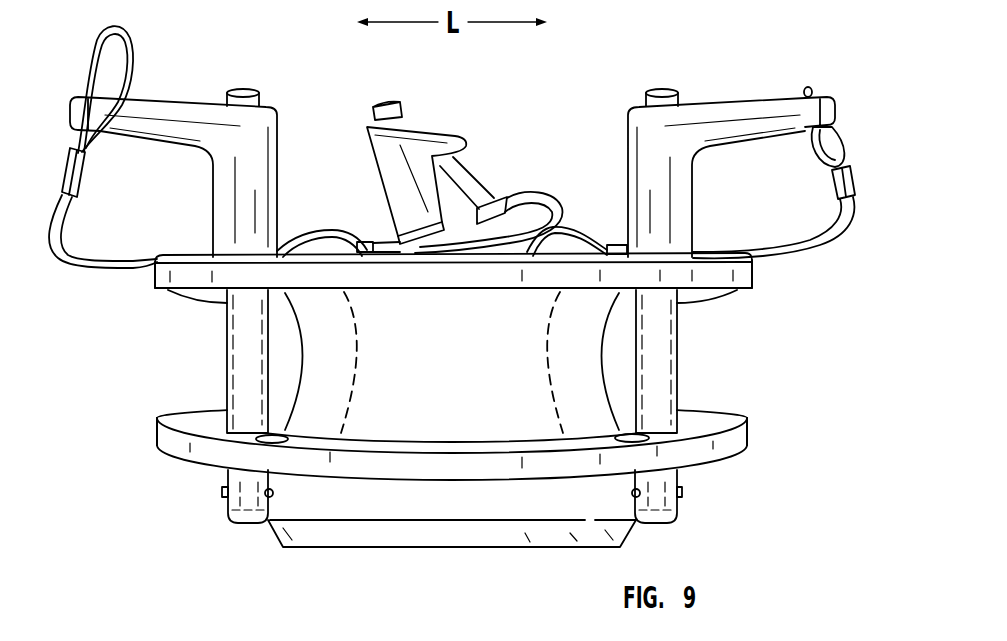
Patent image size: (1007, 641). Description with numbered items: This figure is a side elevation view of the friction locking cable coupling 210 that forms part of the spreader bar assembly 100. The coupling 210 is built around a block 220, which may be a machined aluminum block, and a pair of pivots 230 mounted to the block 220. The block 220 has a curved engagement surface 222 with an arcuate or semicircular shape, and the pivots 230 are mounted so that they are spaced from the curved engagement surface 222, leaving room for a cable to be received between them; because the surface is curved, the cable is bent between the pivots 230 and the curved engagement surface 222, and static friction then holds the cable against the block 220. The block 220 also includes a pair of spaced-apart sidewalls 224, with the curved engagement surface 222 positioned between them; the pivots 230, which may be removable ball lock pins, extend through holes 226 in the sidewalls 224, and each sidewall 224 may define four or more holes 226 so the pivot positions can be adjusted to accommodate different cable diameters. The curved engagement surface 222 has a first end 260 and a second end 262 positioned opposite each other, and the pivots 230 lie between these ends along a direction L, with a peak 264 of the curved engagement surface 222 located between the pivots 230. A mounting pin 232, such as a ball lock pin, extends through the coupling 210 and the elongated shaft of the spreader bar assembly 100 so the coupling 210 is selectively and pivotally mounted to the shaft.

The spreader bar assembly 100 is at (454, 297).
The friction locking cable coupling 210 is at (157, 291).
The block 220 is at (493, 473).
The curved engagement surface 222 is at (743, 282).
The sidewalls 224 is at (745, 433).
The holes 226 is at (258, 452).
The pivots 230 is at (260, 120).
The mounting pin 232 is at (413, 128).
The first end 260 is at (697, 398).
The second end 262 is at (208, 402).
The peak 264 is at (452, 398).